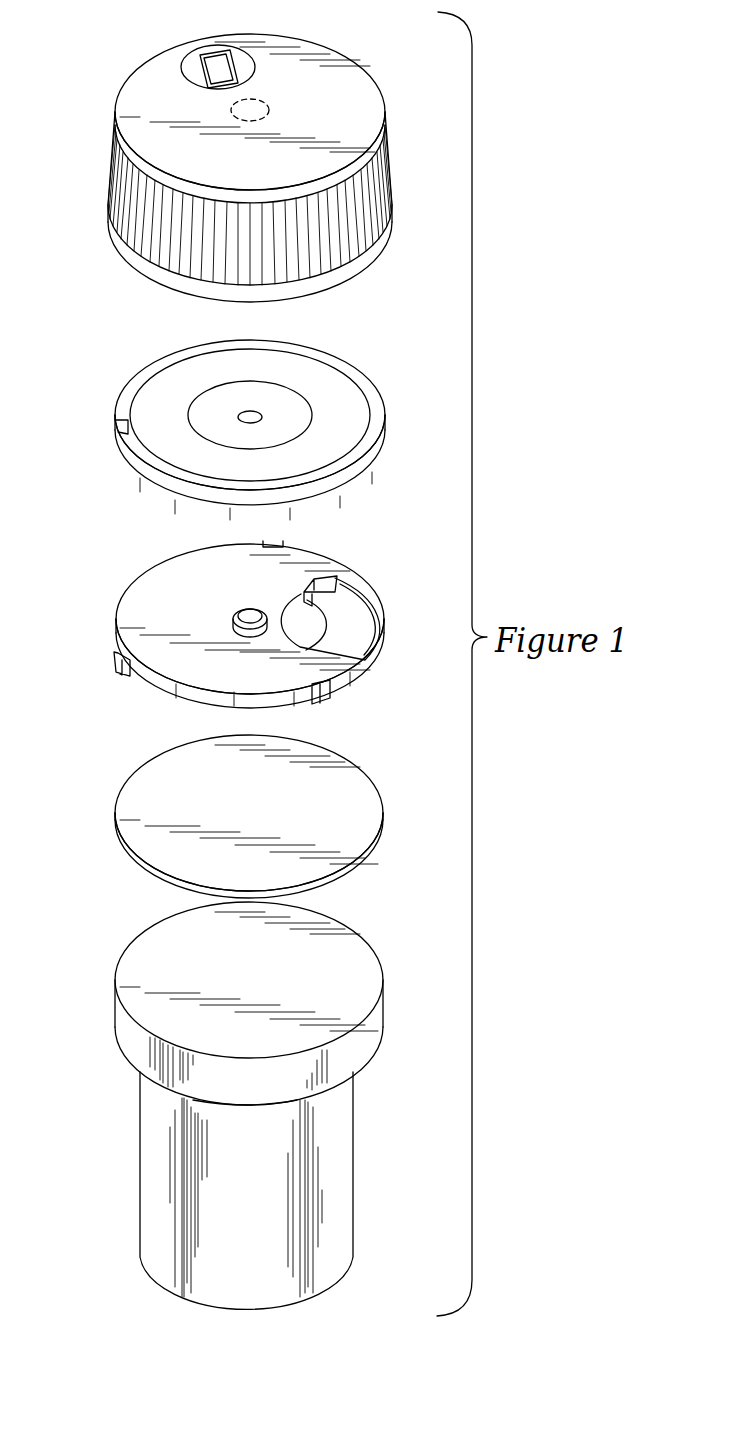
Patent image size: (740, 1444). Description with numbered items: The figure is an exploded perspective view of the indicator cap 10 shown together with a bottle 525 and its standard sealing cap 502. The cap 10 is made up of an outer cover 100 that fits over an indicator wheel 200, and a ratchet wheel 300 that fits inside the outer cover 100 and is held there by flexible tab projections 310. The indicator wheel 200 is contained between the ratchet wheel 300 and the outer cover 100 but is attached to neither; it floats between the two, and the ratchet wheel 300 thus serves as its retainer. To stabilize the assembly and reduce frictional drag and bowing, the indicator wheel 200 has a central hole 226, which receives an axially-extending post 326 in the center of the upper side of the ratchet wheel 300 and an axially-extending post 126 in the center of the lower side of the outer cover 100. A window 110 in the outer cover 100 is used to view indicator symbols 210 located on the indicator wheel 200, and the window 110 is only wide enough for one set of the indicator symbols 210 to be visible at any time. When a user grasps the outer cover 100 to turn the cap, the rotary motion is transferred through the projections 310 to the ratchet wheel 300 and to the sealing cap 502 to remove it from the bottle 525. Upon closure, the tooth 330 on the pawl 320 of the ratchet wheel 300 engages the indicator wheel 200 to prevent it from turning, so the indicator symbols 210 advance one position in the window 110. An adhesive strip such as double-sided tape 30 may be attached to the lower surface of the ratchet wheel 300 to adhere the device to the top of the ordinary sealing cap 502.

The cap 10 is at (472, 295).
The outer cover 100 is at (137, 263).
The window 110 is at (198, 73).
The axially-extending post 126 is at (258, 100).
The indicator wheel 200 is at (271, 420).
The indicator symbols 210 is at (350, 425).
The central hole 226 is at (257, 412).
The ratchet wheel 300 is at (244, 633).
The flexible tab projections 310 is at (115, 657).
The pawl 320 is at (335, 630).
The axially-extending post 326 is at (170, 597).
The tooth 330 is at (320, 582).
The double-sided tape 30 is at (145, 785).
The sealing cap 502 is at (117, 1018).
The bottle 525 is at (145, 1175).